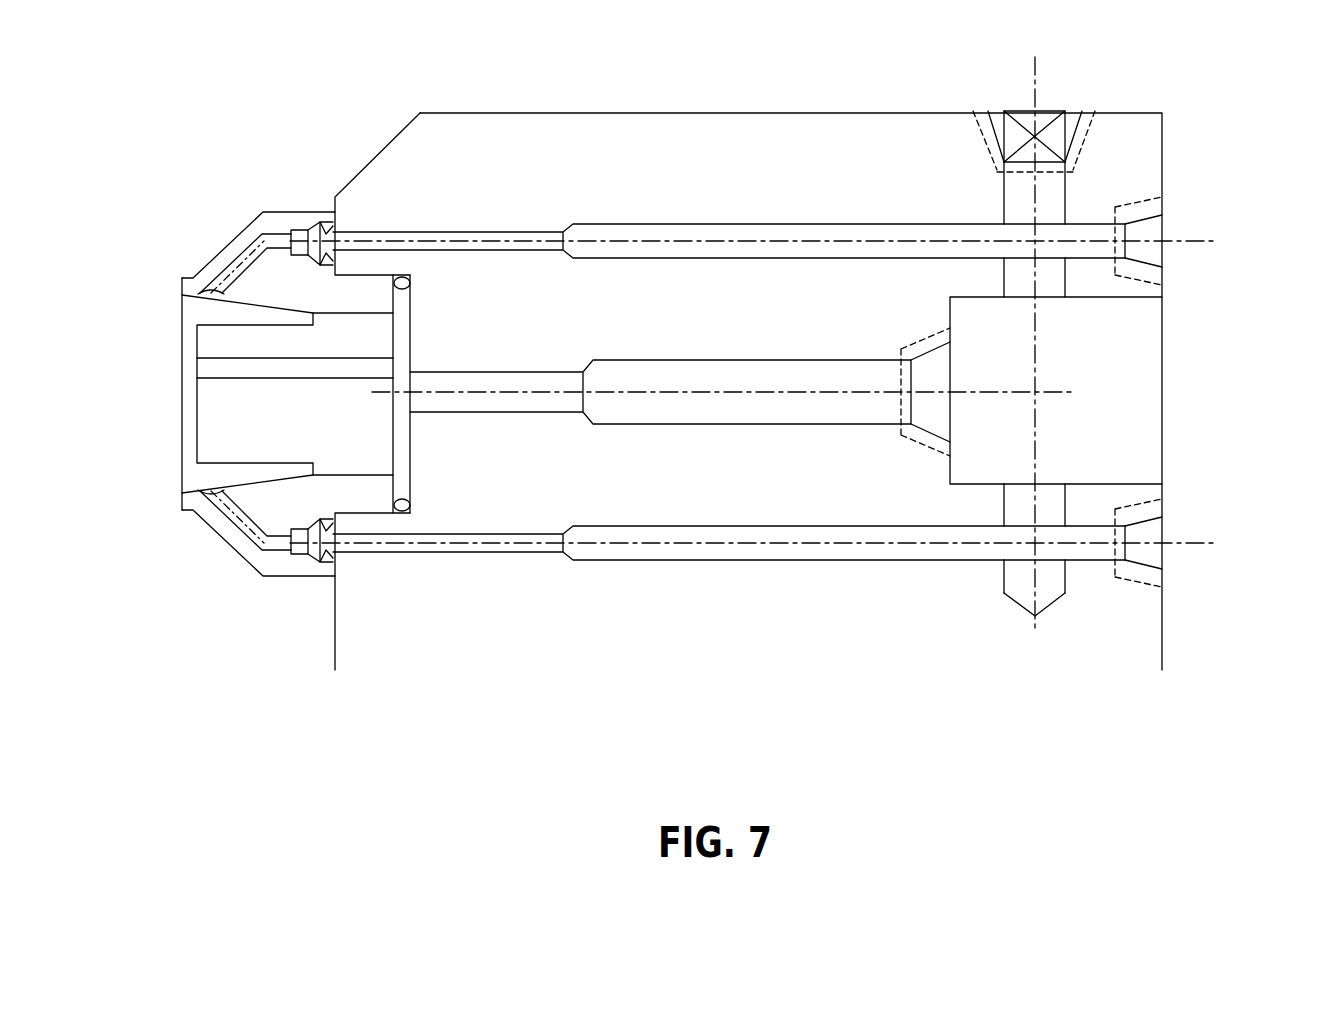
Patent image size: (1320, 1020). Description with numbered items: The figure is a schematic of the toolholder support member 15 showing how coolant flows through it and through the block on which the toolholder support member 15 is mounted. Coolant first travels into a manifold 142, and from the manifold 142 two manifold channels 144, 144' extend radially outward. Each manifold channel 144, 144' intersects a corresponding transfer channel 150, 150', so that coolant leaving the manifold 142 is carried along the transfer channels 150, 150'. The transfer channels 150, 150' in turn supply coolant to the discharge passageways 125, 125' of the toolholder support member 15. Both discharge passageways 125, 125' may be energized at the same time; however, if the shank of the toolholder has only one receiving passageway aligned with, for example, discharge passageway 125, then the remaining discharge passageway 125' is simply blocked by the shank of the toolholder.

The toolholder support member 15 is at (240, 242).
The discharge passageway 125 is at (215, 542).
The discharge passageway 125' is at (215, 231).
The manifold 142 is at (1123, 358).
The manifold channel 144 is at (1123, 344).
The manifold channel 144' is at (1154, 532).
The transfer channel 150 is at (754, 157).
The transfer channel 150' is at (754, 572).